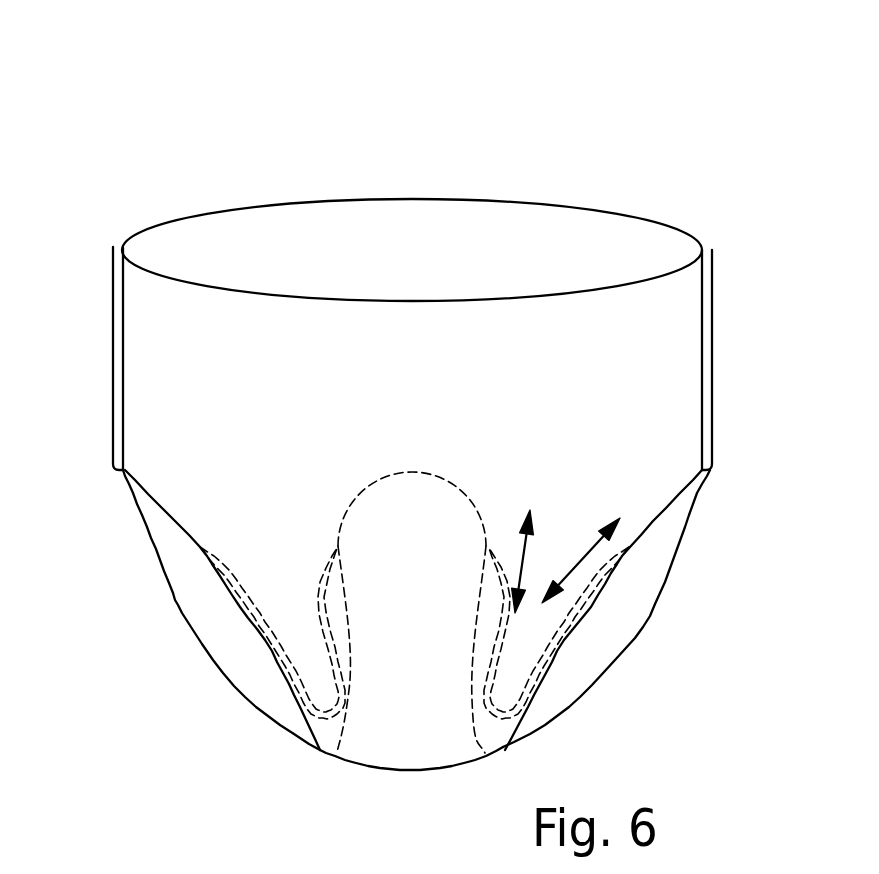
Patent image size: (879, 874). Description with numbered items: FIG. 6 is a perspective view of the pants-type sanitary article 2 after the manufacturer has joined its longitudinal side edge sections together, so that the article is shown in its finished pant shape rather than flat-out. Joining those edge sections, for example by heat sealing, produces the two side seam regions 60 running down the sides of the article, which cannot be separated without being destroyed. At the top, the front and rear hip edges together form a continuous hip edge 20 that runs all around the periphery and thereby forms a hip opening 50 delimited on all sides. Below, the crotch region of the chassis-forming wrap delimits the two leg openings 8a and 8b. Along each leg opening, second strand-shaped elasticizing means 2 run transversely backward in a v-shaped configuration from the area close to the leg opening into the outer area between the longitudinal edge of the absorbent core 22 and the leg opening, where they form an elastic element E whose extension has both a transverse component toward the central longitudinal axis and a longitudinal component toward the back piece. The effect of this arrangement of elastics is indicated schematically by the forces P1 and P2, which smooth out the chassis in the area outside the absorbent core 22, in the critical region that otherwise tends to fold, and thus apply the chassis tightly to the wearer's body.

The sanitary article 2 is at (292, 178).
The hip edge 20 is at (410, 200).
The hip opening 50 is at (437, 252).
The side seam regions 60 is at (113, 362).
The leg opening 8a is at (623, 612).
The leg opening 8b is at (200, 613).
The absorbent core 22 is at (410, 735).
The elastic element E is at (320, 613).
The force P1 is at (583, 548).
The force P2 is at (522, 553).